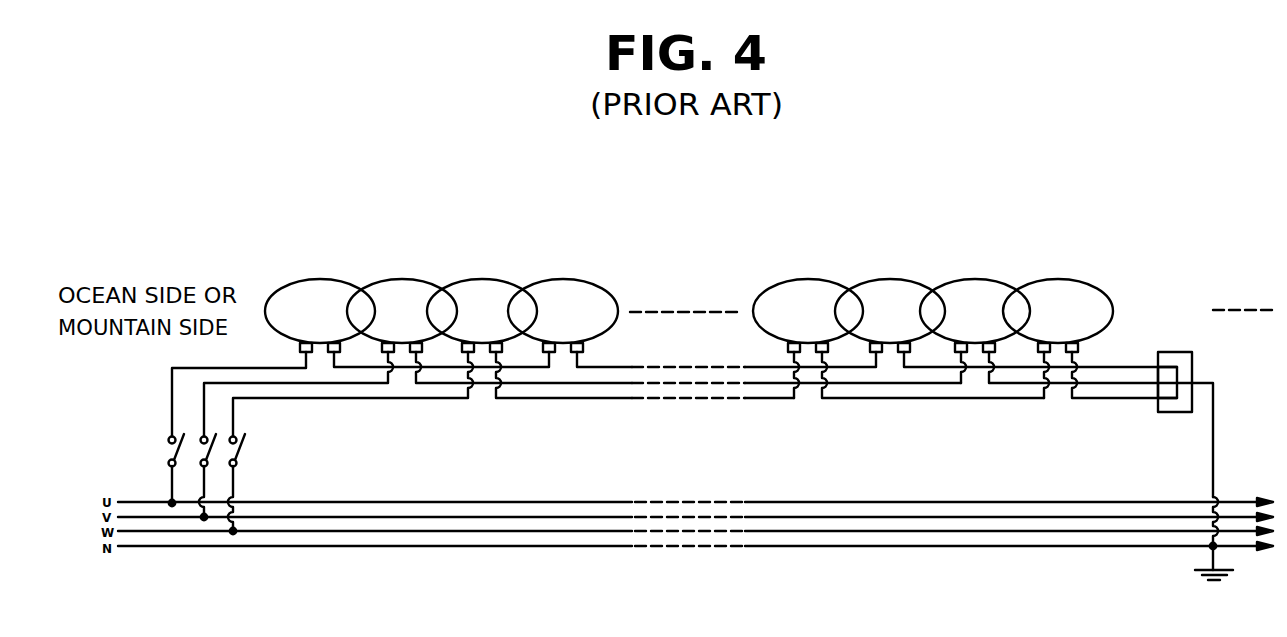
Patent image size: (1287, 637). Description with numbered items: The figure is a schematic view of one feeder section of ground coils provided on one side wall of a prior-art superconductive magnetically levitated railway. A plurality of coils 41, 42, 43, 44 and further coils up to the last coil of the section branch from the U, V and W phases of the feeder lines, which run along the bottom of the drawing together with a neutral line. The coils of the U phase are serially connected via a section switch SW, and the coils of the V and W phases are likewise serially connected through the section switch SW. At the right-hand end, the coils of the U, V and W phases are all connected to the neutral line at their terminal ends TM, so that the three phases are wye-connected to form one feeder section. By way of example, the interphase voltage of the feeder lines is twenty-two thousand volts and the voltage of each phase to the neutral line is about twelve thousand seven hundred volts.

The coil 41 is at (340, 282).
The coil 42 is at (427, 282).
The coil 43 is at (505, 282).
The coil 44 is at (585, 282).
The section switch SW is at (158, 453).
The terminal ends TM is at (1192, 370).